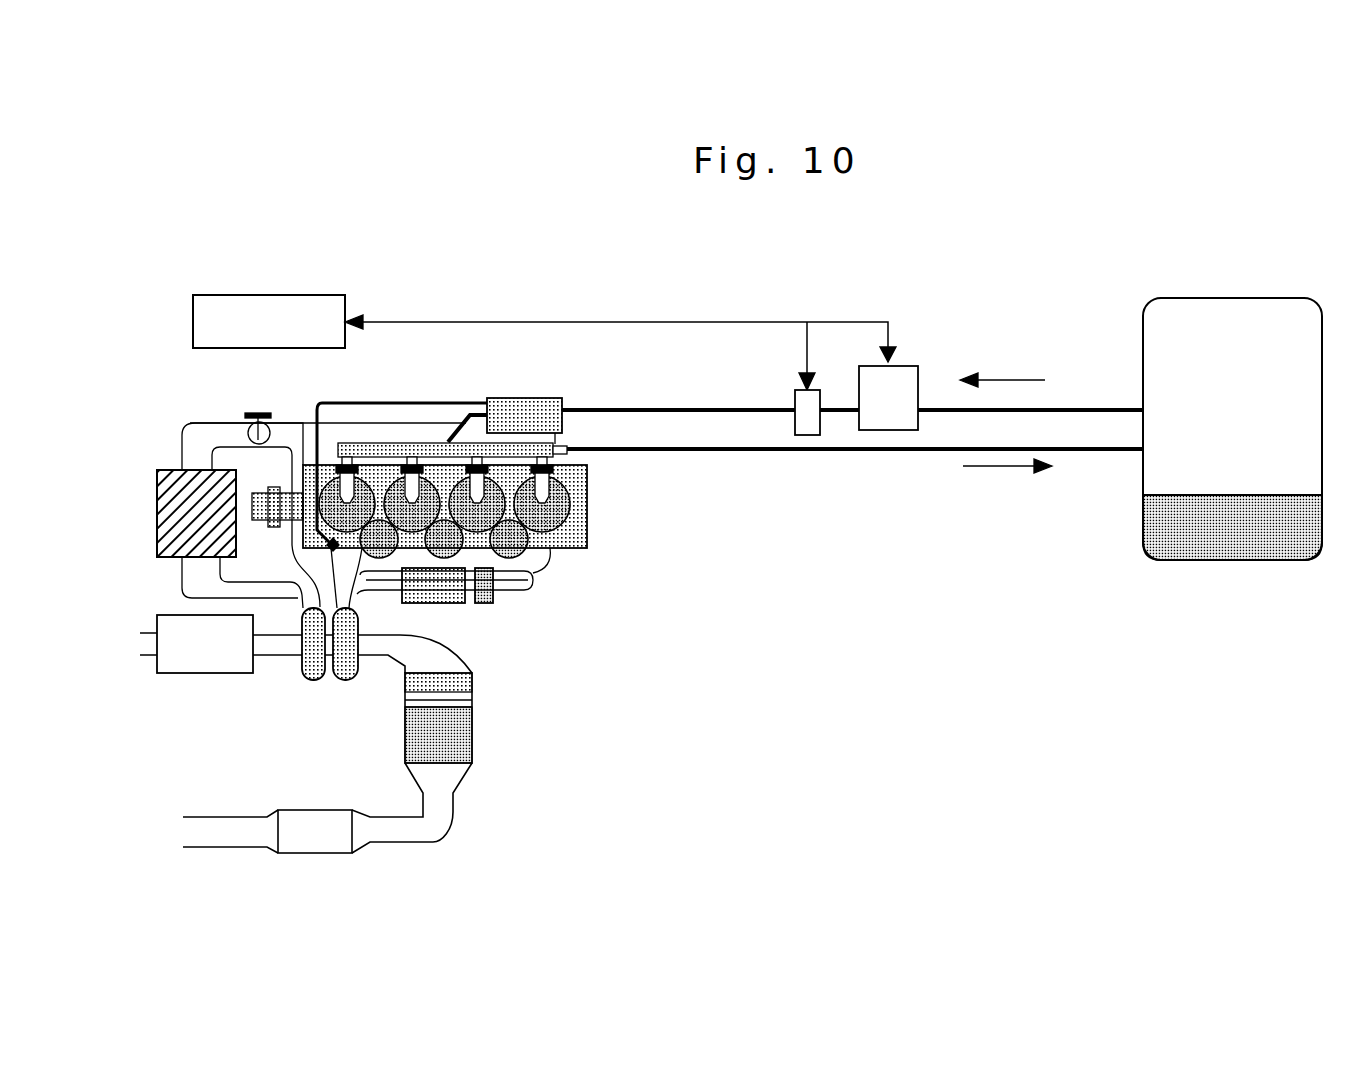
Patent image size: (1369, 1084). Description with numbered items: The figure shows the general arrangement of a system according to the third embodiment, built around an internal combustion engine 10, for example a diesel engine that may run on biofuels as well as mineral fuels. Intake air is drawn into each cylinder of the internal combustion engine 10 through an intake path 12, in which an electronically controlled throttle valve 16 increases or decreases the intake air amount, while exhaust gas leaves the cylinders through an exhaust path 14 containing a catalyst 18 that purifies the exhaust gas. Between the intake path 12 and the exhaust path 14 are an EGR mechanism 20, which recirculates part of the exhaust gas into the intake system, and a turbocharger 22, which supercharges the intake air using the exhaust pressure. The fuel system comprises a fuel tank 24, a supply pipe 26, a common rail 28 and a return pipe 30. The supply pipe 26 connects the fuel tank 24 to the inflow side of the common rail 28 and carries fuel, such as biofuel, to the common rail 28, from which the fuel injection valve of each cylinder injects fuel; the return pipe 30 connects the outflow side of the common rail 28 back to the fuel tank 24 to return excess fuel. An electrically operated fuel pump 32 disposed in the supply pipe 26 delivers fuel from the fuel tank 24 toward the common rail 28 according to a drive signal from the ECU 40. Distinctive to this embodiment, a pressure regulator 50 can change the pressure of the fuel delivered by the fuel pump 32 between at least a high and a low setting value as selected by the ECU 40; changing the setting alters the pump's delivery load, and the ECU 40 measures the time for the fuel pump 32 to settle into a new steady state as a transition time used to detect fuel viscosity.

The internal combustion engine 10 is at (607, 513).
The intake path 12 is at (190, 455).
The exhaust path 14 is at (440, 817).
The throttle valve 16 is at (243, 415).
The catalyst 18 is at (473, 733).
The EGR mechanism 20 is at (510, 593).
The turbocharger 22 is at (315, 682).
The fuel tank 24 is at (1185, 298).
The supply pipe 26 is at (1095, 408).
The common rail 28 is at (422, 443).
The return pipe 30 is at (832, 453).
The fuel pump 32 is at (907, 365).
The ECU 40 is at (327, 294).
The pressure regulator 50 is at (793, 388).